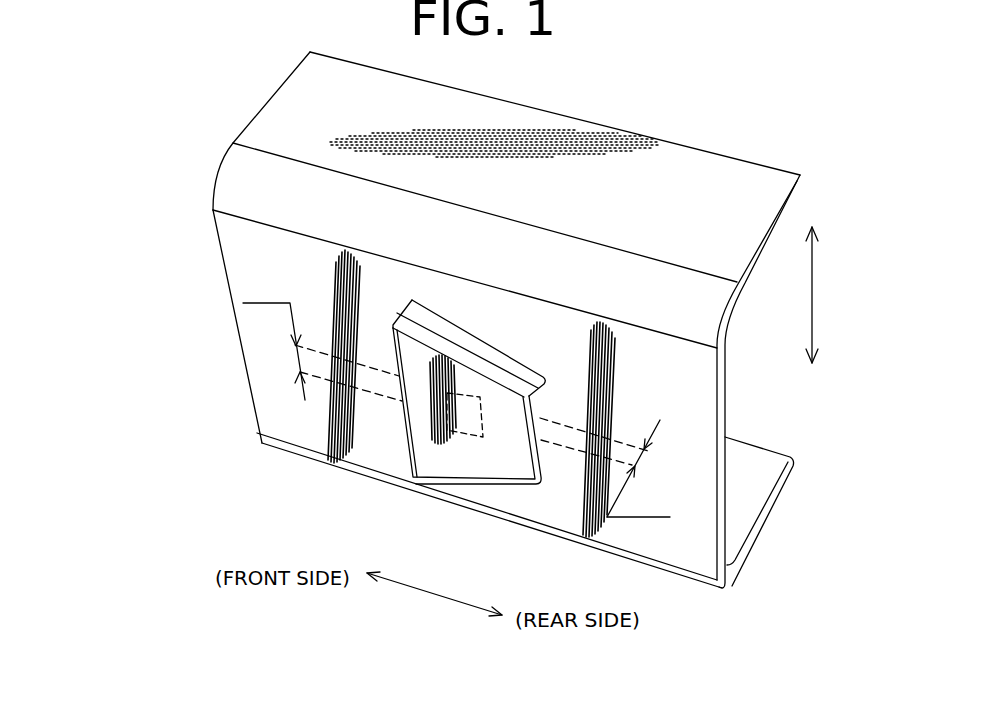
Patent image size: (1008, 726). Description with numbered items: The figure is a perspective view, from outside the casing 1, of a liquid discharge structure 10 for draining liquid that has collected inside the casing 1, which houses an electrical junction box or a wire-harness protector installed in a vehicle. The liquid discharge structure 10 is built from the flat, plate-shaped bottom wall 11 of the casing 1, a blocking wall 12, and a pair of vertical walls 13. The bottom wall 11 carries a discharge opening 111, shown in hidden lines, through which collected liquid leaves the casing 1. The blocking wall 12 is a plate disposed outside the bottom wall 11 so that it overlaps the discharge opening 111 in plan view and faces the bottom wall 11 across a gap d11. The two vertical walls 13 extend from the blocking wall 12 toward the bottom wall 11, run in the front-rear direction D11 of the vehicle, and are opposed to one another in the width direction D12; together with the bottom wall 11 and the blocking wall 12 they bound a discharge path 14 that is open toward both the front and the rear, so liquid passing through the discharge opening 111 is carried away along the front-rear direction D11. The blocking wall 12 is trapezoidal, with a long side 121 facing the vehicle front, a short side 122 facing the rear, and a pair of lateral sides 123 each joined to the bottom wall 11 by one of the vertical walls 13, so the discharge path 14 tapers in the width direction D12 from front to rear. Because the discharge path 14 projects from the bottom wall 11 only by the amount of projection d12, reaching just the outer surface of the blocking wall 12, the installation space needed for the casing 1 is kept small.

The casing 1 is at (577, 98).
The liquid discharge structure 10 is at (199, 257).
The bottom wall 11 is at (680, 362).
The blocking wall 12 is at (410, 440).
The long side 121 is at (420, 445).
The short side 122 is at (538, 443).
The lateral sides 123 is at (470, 358).
The discharge opening 111 is at (463, 432).
The vertical walls 13 is at (442, 323).
The discharge path 14 is at (557, 414).
The amount of projection d12 is at (274, 338).
The gap d11 is at (638, 468).
The width direction D12 is at (812, 291).
The front-rear direction D11 is at (427, 592).